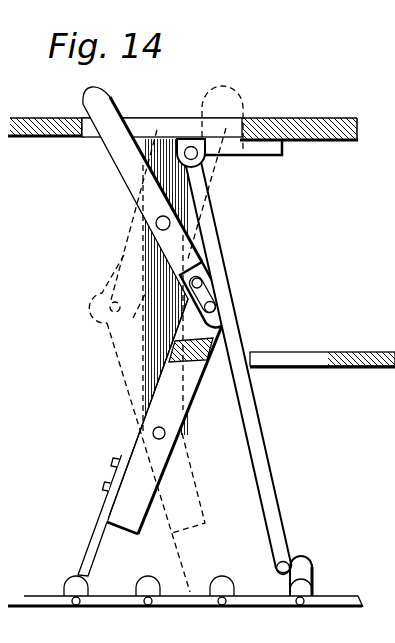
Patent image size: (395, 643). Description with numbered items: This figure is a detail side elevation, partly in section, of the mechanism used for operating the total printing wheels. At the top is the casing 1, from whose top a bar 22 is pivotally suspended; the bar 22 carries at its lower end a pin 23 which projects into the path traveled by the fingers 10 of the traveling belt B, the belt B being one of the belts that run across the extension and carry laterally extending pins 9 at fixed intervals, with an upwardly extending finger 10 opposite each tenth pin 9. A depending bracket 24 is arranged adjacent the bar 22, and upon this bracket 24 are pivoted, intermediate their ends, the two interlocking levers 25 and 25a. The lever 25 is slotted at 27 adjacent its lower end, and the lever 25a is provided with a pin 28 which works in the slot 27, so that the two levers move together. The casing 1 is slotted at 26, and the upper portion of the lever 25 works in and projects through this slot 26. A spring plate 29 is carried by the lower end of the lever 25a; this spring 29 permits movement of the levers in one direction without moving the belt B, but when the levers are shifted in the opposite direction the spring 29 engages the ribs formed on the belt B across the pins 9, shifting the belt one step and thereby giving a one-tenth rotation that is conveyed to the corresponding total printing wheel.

The casing 1 is at (321, 128).
The slot 26 is at (155, 130).
The interlocking lever 25 is at (126, 179).
The interlocking lever 25a is at (185, 424).
The depending bracket 24 is at (176, 188).
The slot 27 is at (200, 282).
The pin 28 is at (214, 307).
The bar 22 is at (231, 338).
The spring plate 29 is at (92, 538).
The pin 23 is at (288, 561).
The finger 10 is at (306, 562).
The pin 9 is at (76, 606).
The traveling belt B is at (150, 638).